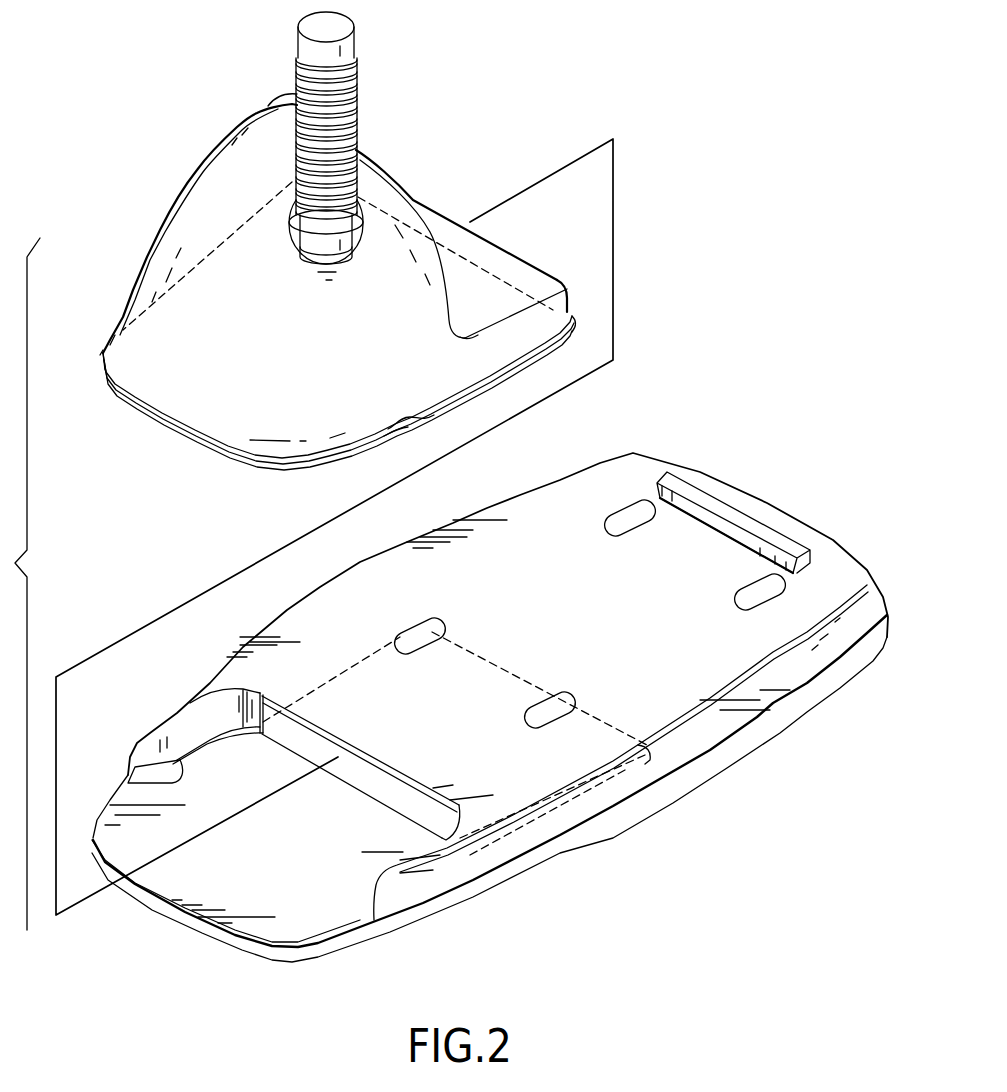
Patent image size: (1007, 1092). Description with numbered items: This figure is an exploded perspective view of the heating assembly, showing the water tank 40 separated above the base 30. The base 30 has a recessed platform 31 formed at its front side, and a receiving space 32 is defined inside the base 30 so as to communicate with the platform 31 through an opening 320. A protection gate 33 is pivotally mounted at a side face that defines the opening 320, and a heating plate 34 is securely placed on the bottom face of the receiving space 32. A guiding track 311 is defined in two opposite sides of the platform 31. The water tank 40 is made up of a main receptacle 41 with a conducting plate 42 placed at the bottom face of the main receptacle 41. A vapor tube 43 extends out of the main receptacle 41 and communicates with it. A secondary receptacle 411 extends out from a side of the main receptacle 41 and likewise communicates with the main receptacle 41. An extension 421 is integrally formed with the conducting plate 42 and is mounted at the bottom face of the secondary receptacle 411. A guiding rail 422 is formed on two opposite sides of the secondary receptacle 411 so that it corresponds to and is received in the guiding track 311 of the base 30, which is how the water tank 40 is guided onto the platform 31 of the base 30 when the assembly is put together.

The base 30 is at (478, 718).
The recessed platform 31 is at (293, 932).
The guiding track 311 is at (127, 782).
The receiving space 32 is at (463, 673).
The opening 320 is at (370, 755).
The protection gate 33 is at (267, 707).
The heating plate 34 is at (560, 806).
The water tank 40 is at (374, 251).
The main receptacle 41 is at (217, 153).
The secondary receptacle 411 is at (507, 263).
The conducting plate 42 is at (392, 383).
The extension 421 is at (570, 322).
The guiding rail 422 is at (458, 387).
The vapor tube 43 is at (330, 30).